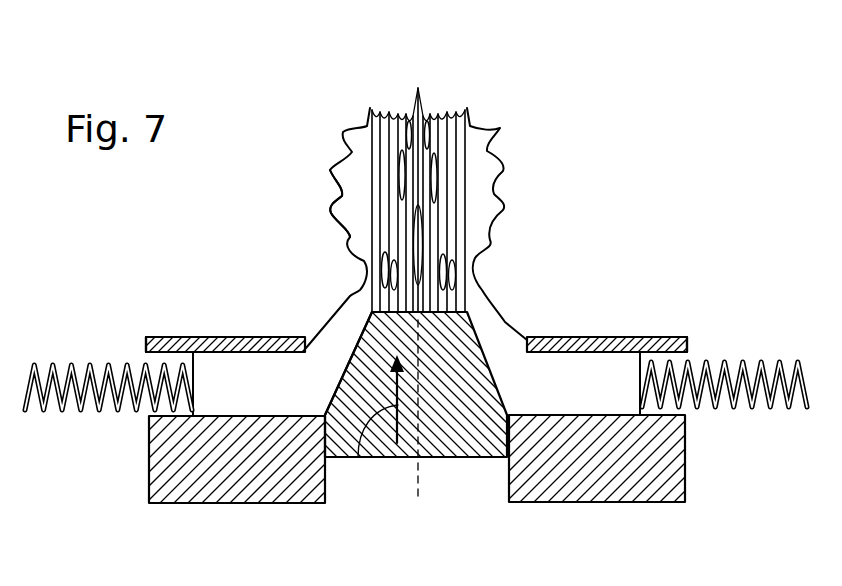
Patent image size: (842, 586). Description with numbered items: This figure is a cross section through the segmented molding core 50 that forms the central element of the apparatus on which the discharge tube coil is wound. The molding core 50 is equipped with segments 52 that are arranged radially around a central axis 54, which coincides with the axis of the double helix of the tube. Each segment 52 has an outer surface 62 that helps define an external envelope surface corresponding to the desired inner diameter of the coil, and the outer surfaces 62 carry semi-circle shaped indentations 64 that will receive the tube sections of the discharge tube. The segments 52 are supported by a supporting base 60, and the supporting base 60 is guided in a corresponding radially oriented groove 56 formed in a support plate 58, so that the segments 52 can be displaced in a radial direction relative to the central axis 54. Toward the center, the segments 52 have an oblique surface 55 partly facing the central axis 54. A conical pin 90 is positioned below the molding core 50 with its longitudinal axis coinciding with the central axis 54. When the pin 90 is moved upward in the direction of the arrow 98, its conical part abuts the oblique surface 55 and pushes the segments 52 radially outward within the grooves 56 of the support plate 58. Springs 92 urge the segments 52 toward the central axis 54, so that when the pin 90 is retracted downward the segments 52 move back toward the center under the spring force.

The molding core 50 is at (575, 157).
The segments 52 is at (407, 88).
The central axis 54 is at (418, 485).
The oblique surface 55 is at (366, 358).
The grooves 56 is at (138, 354).
The support plate 58 is at (185, 483).
The supporting base 60 is at (253, 377).
The outer surface 62 is at (497, 183).
The semi-circle shaped indentations 64 is at (325, 222).
The conical pin 90 is at (480, 433).
The springs 92 is at (115, 413).
The arrow 98 is at (360, 458).